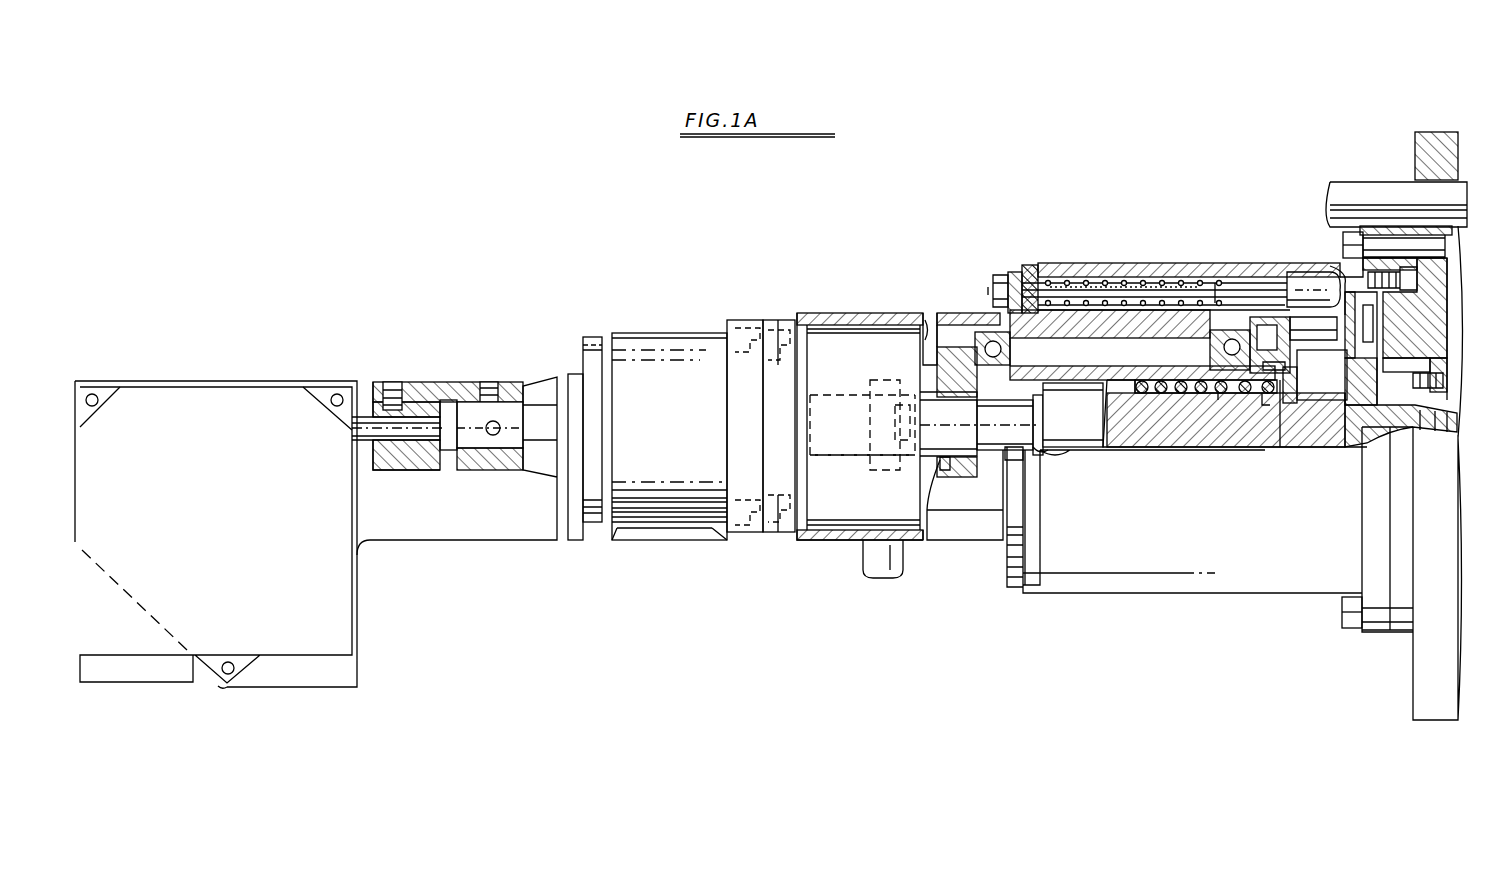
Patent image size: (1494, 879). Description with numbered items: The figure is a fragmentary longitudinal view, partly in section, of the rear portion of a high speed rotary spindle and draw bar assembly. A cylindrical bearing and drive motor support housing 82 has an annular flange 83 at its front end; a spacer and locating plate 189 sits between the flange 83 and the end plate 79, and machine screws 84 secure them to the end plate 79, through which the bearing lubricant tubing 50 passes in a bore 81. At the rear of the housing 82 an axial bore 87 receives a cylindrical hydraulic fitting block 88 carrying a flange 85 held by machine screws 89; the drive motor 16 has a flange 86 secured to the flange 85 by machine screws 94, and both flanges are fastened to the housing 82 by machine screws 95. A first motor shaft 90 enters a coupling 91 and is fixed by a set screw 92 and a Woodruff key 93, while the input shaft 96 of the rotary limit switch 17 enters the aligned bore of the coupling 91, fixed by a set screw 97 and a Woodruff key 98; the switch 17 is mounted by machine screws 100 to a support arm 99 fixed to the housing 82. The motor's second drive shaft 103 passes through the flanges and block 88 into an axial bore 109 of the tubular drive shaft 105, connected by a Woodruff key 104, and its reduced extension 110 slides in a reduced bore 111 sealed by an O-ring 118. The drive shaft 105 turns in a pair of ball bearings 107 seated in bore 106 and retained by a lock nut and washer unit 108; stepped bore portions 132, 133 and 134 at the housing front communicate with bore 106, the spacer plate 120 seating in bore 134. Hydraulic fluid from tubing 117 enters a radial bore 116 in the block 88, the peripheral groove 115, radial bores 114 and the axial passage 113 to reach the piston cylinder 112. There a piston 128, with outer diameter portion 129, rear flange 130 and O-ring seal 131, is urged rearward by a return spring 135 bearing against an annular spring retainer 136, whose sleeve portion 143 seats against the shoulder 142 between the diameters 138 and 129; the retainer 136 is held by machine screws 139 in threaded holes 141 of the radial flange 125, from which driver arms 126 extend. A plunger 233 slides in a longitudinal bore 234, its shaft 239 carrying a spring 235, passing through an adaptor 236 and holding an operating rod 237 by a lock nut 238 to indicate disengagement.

The draw bar assembly drive motor 16 is at (653, 332).
The broken collet indicator means 17 is at (219, 378).
The bearing lubricant tubing 50 is at (1352, 195).
The end plate 79 is at (1420, 145).
The bore 81 is at (1437, 185).
The bearing and draw bar assembly drive motor support housing 82 is at (1200, 275).
The annular flange 83 is at (1370, 631).
The machine screws 84 is at (1345, 267).
The flange 85 is at (785, 534).
The flange 86 is at (740, 535).
The axial bore 87 is at (928, 325).
The hydraulic fitting block 88 is at (851, 333).
The machine screws 89 is at (781, 335).
The first shaft 90 is at (505, 424).
The coupling 91 is at (440, 385).
The set screw 92 is at (490, 381).
The Woodruff key 93 is at (497, 457).
The machine screws 94 is at (725, 540).
The machine screws 95 is at (744, 326).
The input shaft 96 is at (362, 430).
The set screw 97 is at (390, 385).
The Woodruff key 98 is at (393, 447).
The support arm 99 is at (465, 532).
The machine screws 100 is at (94, 393).
The drive shaft 103 is at (986, 470).
The Woodruff key 104 is at (931, 387).
The tubular drive shaft 105 is at (1142, 345).
The bore 106 is at (1150, 340).
The ball bearing means 107 is at (1112, 350).
The lock nut and washer unit 108 is at (939, 345).
The axial bore 109 is at (947, 463).
The drive motor shaft extension 110 is at (1036, 428).
The reduced diameter bore 111 is at (1045, 447).
The hydraulic fluid piston cylinder 112 is at (1084, 420).
The axial hydraulic fluid passage 113 is at (913, 397).
The radially extended bores 114 is at (882, 430).
The peripheral groove 115 is at (870, 394).
The radial bore 116 is at (870, 477).
The hydraulic fluid tubing 117 is at (880, 566).
The O-ring seal means 118 is at (1020, 460).
The spacer plate 120 is at (1333, 425).
The radial flange 125 is at (1265, 327).
The driver arms 126 is at (1345, 272).
The piston 128 is at (1365, 440).
The piston outer diameter portion 129 is at (1192, 393).
The flange 130 is at (1130, 387).
The O-ring seal 131 is at (1121, 390).
The stepped bore portion 132 is at (1282, 317).
The stepped bore portion 133 is at (1340, 262).
The stepped bore portion 134 is at (1400, 308).
The piston return spring 135 is at (1220, 396).
The annular spring retainer member 136 is at (1298, 382).
The stepped outer diameter portion 138 is at (1324, 400).
The machine screws 139 is at (1291, 367).
The threaded holes 141 is at (1306, 413).
The shoulder 142 is at (1265, 396).
The axial integral sleeve portion 143 is at (1263, 455).
The spacer and locating plate 189 is at (1406, 630).
The plunger 233 is at (1225, 283).
The longitudinal bore 234 is at (1106, 281).
The spring 235 is at (1078, 282).
The adaptor 236 is at (1027, 266).
The operating rod 237 is at (1013, 270).
The lock nut 238 is at (997, 280).
The reduced diameter shaft 239 is at (1050, 290).